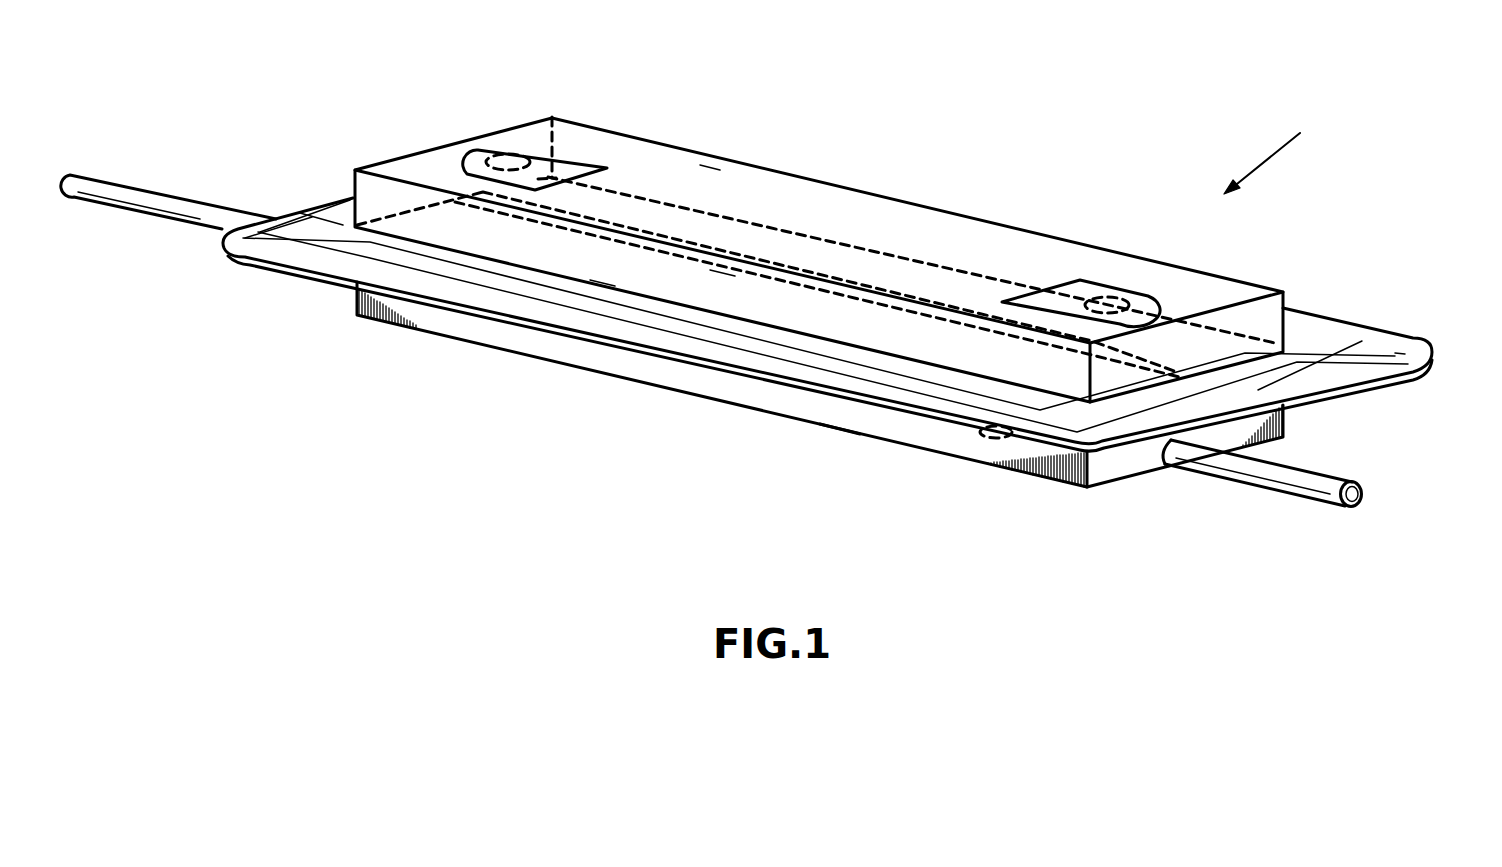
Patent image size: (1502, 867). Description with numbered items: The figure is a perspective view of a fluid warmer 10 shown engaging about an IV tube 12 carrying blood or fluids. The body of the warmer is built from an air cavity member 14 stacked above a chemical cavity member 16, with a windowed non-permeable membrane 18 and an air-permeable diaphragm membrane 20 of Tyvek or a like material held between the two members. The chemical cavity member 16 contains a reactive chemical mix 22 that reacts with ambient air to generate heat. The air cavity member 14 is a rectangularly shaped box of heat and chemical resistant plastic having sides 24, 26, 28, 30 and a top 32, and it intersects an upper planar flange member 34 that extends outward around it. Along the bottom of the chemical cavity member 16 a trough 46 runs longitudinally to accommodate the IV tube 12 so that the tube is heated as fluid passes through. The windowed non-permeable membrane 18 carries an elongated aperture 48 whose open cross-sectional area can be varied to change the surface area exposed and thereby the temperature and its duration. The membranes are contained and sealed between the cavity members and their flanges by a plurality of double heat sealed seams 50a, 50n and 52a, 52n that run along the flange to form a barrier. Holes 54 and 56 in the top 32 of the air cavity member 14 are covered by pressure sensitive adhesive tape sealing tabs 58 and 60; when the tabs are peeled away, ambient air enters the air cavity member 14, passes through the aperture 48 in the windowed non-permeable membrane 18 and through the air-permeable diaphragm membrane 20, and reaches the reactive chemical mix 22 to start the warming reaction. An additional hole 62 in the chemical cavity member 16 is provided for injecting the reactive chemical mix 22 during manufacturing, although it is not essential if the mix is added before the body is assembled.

The fluid warmer 10 is at (1278, 155).
The IV tube 12 is at (1327, 507).
The air cavity member 14 is at (1243, 290).
The chemical cavity member 16 is at (1283, 435).
The windowed non-permeable membrane 18 is at (828, 253).
The air-permeable diaphragm membrane 20 is at (913, 277).
The reactive chemical mix 22 is at (850, 418).
The side 24 is at (1272, 330).
The side 26 is at (602, 272).
The side 28 is at (417, 163).
The side 30 is at (820, 197).
The top 32 is at (710, 170).
The upper planar flange member 34 is at (1380, 342).
The trough 46 is at (1160, 448).
The elongated aperture 48 is at (722, 267).
The double heat sealed seam 50a is at (1307, 390).
The double heat sealed seam 50n is at (307, 220).
The double heat sealed seam 52a is at (1357, 380).
The double heat sealed seam 52n is at (343, 225).
The hole 54 is at (500, 153).
The hole 56 is at (1117, 300).
The pressure sensitive adhesive tape sealing tab 58 is at (573, 160).
The pressure sensitive adhesive tape sealing tab 60 is at (1090, 285).
The hole 62 is at (982, 440).